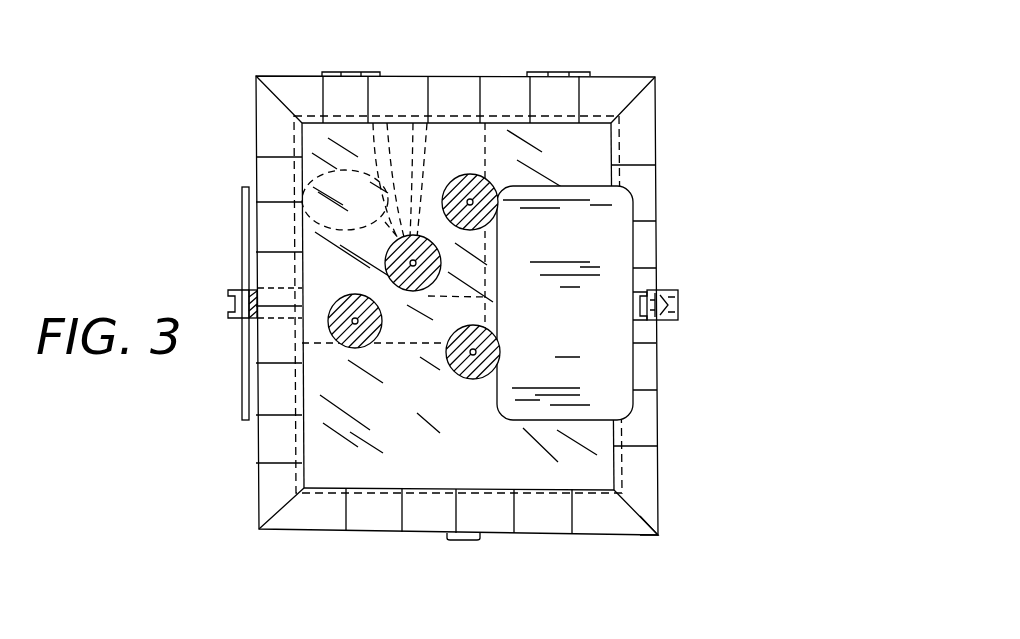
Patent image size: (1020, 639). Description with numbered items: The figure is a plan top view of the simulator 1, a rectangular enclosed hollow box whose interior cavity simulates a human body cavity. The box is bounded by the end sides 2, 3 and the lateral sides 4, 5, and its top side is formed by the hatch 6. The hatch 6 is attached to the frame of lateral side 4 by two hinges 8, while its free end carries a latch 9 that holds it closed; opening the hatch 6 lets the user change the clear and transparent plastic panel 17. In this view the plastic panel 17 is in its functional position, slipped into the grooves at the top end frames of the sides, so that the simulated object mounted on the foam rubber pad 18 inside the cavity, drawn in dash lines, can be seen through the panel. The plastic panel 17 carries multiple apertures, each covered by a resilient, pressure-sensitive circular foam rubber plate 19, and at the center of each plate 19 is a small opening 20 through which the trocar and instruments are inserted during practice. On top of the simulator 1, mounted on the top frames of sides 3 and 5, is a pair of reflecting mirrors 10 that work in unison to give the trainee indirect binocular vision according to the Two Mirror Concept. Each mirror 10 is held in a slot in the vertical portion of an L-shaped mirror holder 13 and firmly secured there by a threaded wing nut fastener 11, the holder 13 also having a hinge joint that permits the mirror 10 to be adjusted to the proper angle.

The simulator 1 is at (668, 422).
The end side 2 is at (342, 531).
The end side 3 is at (258, 472).
The lateral side 4 is at (458, 76).
The lateral side 5 is at (656, 141).
The hatch 6 is at (659, 513).
The hinges 8 is at (350, 72).
The latch 9 is at (462, 540).
The reflecting mirrors 10 is at (243, 385).
The threaded wing nut fastener 11 is at (230, 304).
The mirror holders 13 is at (237, 290).
The plastic panel 17 is at (482, 480).
The foam rubber pad 18 is at (407, 345).
The circular foam rubber plates 19 is at (452, 183).
The small openings 20 is at (473, 203).